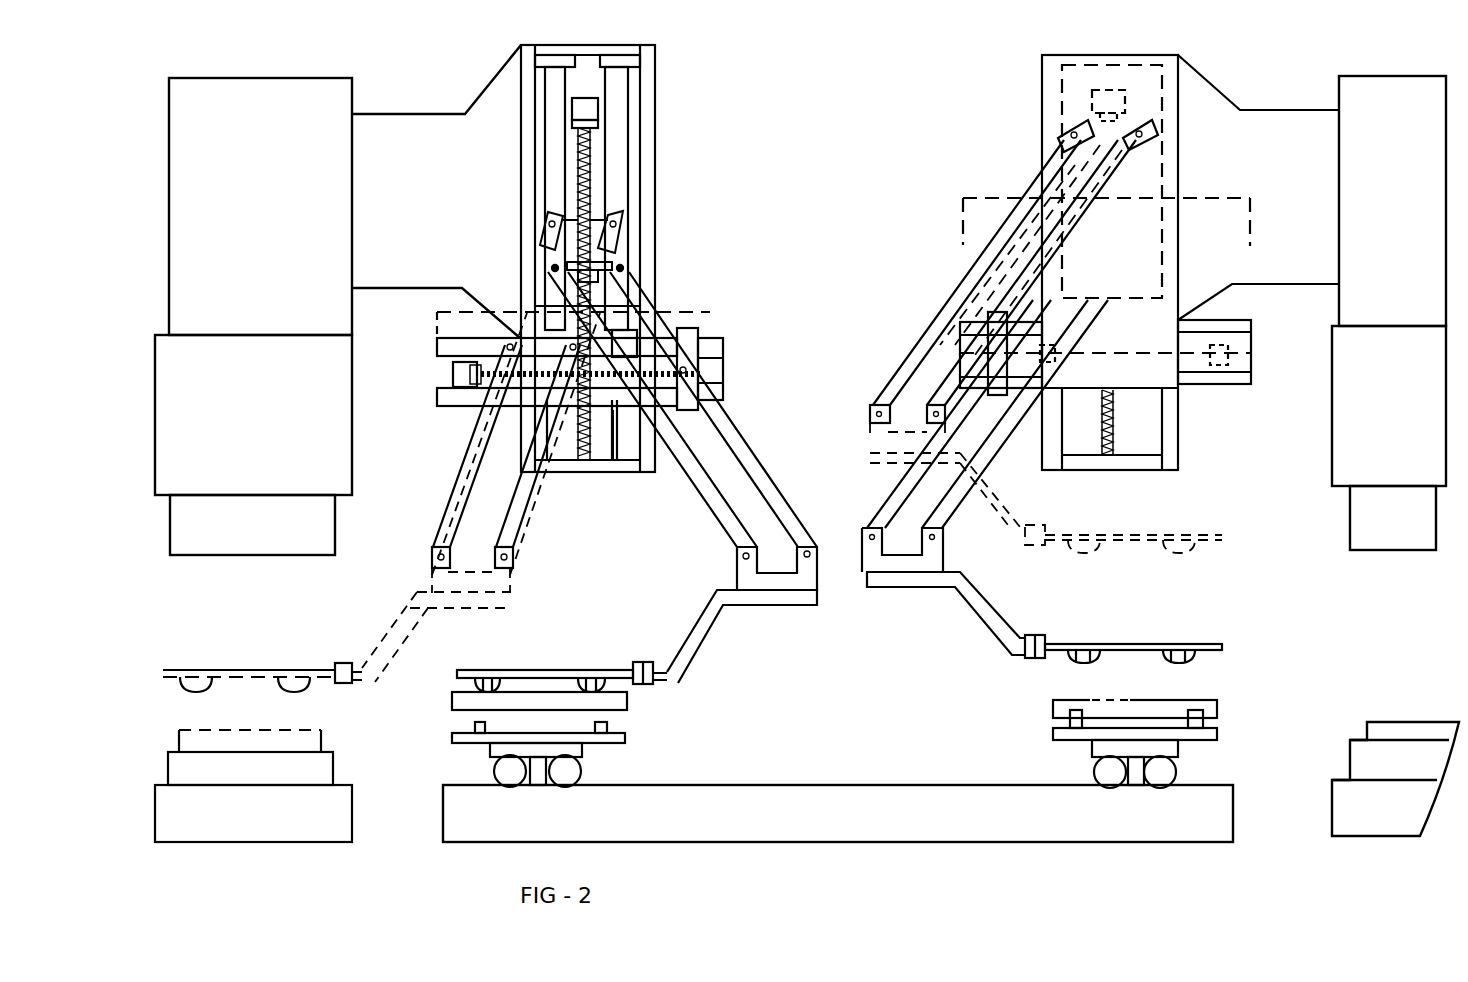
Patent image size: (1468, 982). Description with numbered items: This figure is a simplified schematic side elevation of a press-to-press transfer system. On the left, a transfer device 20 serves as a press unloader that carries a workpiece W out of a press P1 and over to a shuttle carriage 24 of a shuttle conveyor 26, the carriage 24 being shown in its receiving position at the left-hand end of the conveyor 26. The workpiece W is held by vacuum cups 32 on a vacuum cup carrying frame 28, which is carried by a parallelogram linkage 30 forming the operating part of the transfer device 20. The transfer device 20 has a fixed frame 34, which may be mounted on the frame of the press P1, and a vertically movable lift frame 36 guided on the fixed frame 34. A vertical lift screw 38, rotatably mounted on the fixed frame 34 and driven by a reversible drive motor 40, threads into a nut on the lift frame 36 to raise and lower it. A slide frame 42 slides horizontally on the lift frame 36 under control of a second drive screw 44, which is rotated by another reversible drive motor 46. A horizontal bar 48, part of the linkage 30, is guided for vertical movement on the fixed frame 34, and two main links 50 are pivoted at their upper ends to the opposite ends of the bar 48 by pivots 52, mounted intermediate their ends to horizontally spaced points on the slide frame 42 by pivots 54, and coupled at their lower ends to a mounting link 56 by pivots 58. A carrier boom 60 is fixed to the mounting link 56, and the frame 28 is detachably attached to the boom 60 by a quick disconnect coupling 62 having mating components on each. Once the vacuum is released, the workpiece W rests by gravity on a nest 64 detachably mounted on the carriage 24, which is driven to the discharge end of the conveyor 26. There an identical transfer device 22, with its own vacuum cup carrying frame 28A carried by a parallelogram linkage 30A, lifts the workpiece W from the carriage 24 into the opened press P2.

The transfer device 20 is at (672, 131).
The transfer device 22 is at (1040, 98).
The shuttle carriage 24 is at (580, 753).
The shuttle conveyor 26 is at (784, 785).
The vacuum cup carrying frame 28 is at (290, 620).
The vacuum cup carrying frame 28A is at (1114, 640).
The parallelogram linkage 30 is at (682, 477).
The parallelogram linkage 30A is at (996, 462).
The vacuum cups 32 is at (482, 677).
The fixed frame 34 is at (705, 224).
The lift frame 36 is at (714, 347).
The lift screw 38 is at (590, 180).
The drive motor 40 is at (592, 106).
The slide frame 42 is at (686, 343).
The second drive screw 44 is at (481, 497).
The drive motor 46 is at (452, 373).
The horizontal bar 48 is at (552, 262).
The main links 50 is at (733, 450).
The pivots 52 is at (545, 240).
The pivots 54 is at (690, 371).
The mounting link 56 is at (775, 583).
The pivots 58 is at (803, 550).
The carrier boom 60 is at (700, 630).
The quick disconnect coupling 62 is at (645, 663).
The nest 64 is at (452, 738).
The press P1 is at (328, 474).
The press P2 is at (1356, 395).
The workpiece W is at (305, 728).